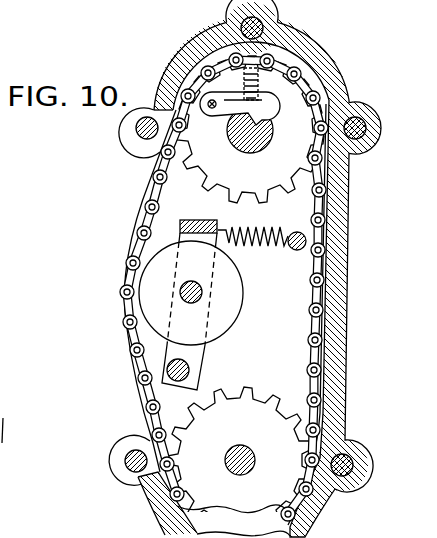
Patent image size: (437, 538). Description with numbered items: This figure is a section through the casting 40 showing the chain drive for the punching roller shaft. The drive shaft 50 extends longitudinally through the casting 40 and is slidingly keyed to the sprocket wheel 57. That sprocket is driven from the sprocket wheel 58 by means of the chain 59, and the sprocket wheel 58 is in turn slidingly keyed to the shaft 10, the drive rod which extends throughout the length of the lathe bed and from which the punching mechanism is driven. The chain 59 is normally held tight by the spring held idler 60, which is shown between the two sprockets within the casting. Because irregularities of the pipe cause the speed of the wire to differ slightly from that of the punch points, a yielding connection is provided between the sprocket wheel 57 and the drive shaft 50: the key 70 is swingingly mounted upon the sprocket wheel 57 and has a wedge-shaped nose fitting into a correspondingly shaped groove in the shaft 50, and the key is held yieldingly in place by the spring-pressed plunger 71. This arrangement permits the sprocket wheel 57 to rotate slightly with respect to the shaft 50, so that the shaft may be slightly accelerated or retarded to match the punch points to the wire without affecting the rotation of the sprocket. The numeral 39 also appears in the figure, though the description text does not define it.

The drive rod 10 is at (240, 452).
The housing 39 is at (18, 428).
The casting 40 is at (13, 279).
The drive shaft 50 is at (273, 123).
The sprocket wheel 57 is at (208, 157).
The sprocket wheel 58 is at (255, 407).
The chain 59 is at (128, 273).
The spring held idler 60 is at (230, 287).
The key 70 is at (228, 98).
The spring-pressed plunger 71 is at (238, 84).